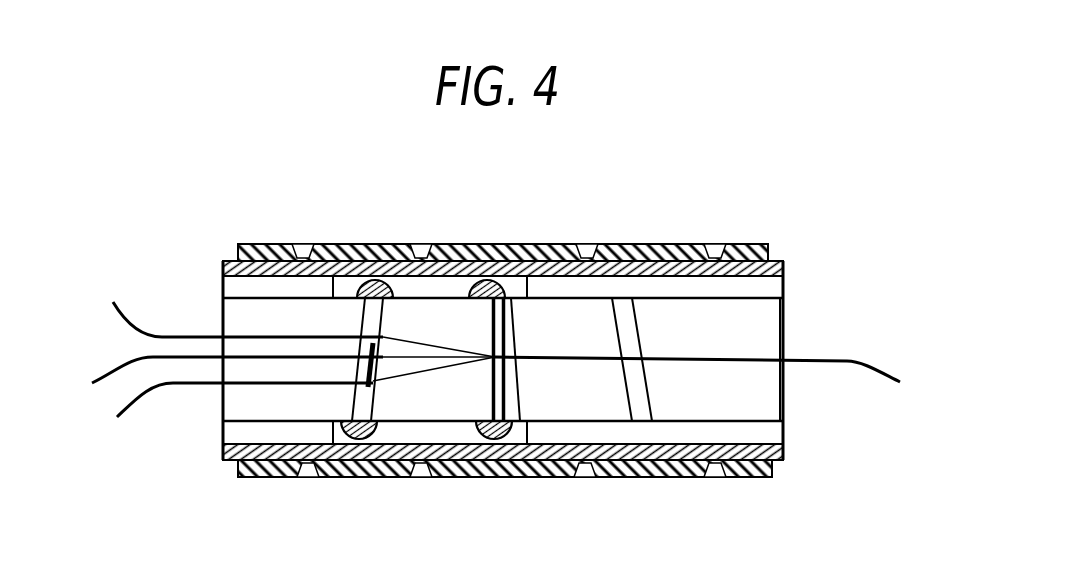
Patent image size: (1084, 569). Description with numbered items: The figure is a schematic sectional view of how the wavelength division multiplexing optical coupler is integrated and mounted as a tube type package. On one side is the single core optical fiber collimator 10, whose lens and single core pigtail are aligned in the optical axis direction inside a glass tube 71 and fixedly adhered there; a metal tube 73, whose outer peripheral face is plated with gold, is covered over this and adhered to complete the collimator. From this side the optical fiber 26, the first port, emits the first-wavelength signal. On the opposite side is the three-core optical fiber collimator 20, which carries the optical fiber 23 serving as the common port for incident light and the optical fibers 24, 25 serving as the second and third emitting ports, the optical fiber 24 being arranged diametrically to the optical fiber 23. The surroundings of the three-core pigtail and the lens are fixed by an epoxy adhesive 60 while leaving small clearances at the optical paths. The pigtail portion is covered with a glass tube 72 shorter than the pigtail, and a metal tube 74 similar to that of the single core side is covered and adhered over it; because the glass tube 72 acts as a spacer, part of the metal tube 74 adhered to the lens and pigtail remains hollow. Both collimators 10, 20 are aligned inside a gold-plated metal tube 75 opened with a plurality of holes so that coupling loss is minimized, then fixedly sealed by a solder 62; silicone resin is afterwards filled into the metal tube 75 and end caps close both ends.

The single core optical fiber collimator 10 is at (586, 405).
The three-core optical fiber collimator 20 is at (422, 405).
The optical fiber for incident light 23 is at (148, 323).
The optical fiber for emitting light 24 is at (100, 373).
The optical fiber for emitting light 25 is at (170, 387).
The optical fiber for emitting light 26 is at (853, 366).
The epoxy adhesive 60 is at (369, 245).
The solder 62 is at (423, 252).
The glass tube 71 is at (780, 290).
The glass tube 72 is at (222, 290).
The metal tube 73 is at (778, 261).
The metal tube 74 is at (232, 257).
The gold-plated metal tube 75 is at (647, 246).